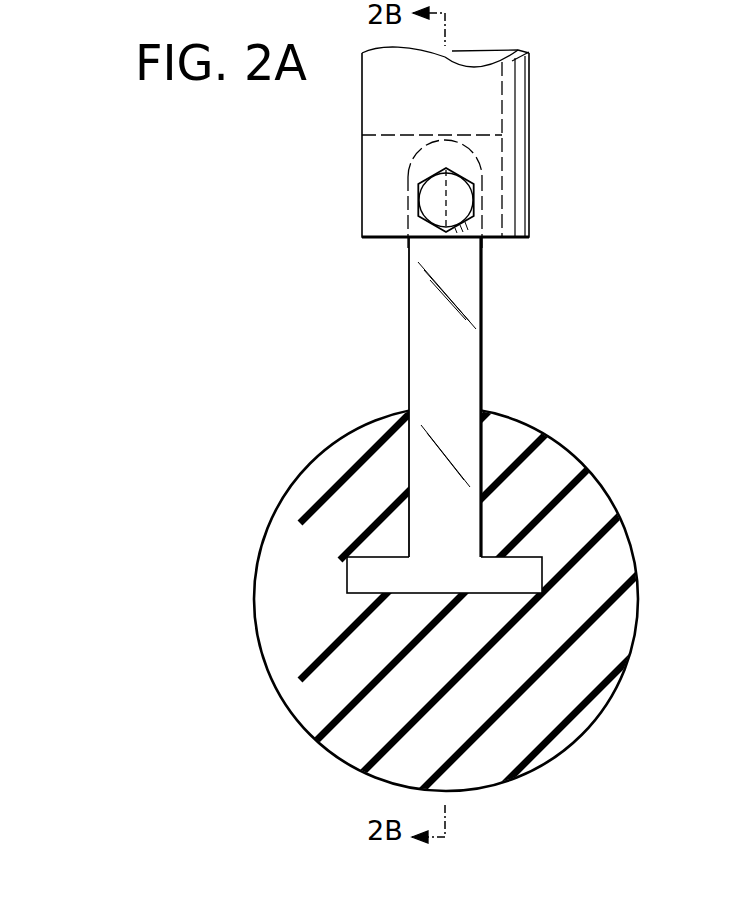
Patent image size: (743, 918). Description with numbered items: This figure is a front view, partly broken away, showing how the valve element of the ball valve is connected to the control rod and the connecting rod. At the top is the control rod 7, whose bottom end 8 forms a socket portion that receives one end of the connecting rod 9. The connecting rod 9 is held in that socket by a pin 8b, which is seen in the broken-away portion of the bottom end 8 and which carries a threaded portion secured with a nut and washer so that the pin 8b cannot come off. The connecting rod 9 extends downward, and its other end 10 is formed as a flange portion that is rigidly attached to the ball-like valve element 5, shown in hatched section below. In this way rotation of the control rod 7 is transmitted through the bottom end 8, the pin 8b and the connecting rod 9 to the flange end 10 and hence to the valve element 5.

The valve element 5 is at (592, 507).
The control rod 7 is at (522, 93).
The bottom end of the control rod 8 is at (513, 183).
The pin 8b is at (420, 202).
The connecting rod 9 is at (468, 370).
The other end of the connecting rod 10 is at (533, 575).